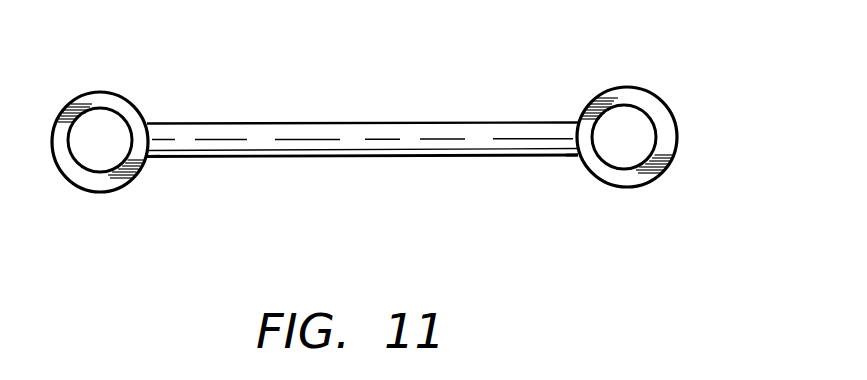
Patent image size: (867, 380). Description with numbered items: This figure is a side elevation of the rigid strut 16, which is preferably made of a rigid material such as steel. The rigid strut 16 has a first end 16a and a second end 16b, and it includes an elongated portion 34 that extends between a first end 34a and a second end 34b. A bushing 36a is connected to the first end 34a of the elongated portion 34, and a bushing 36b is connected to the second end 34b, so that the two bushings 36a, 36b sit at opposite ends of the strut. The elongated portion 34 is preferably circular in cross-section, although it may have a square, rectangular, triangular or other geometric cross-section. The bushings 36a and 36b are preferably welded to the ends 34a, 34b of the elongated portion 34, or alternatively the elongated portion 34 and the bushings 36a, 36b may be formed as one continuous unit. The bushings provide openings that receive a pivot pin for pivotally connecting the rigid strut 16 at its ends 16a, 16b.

The rigid strut 16 is at (651, 219).
The first end of rigid strut 16a is at (98, 200).
The second end of rigid strut 16b is at (701, 161).
The elongated portion 34 is at (458, 128).
The first end of elongated portion 34a is at (150, 162).
The second end of elongated portion 34b is at (580, 158).
The bushing 36a is at (95, 103).
The bushing 36b is at (657, 108).